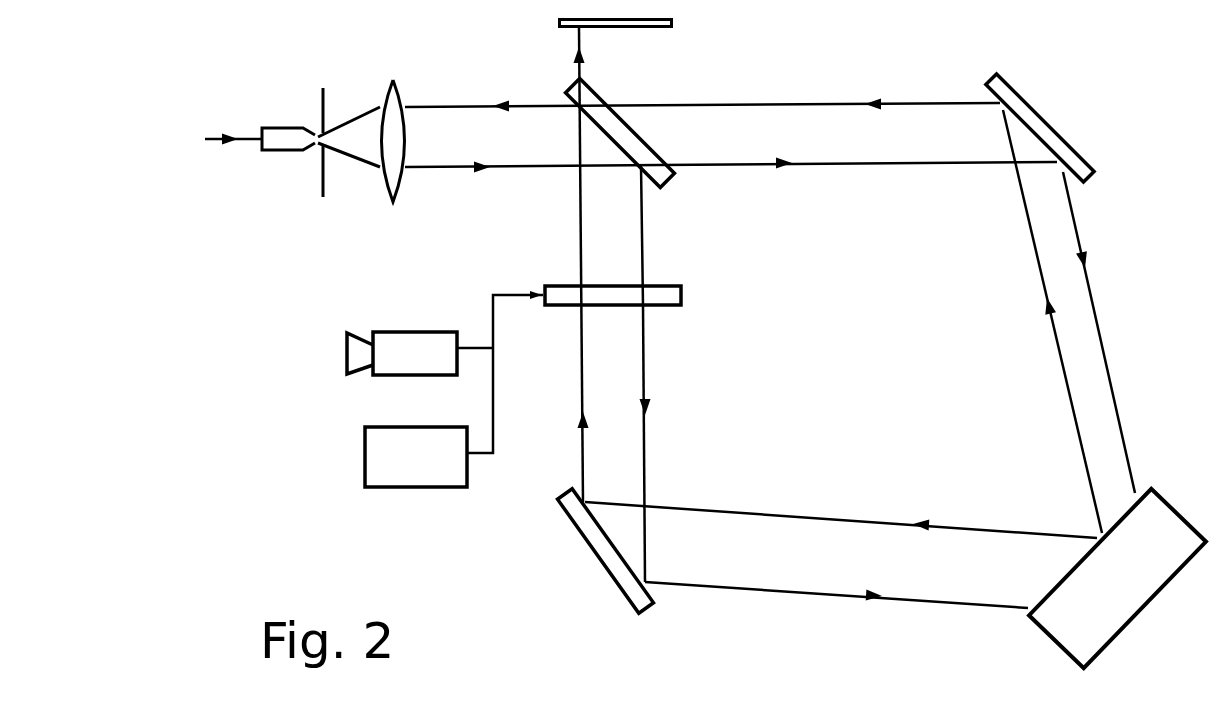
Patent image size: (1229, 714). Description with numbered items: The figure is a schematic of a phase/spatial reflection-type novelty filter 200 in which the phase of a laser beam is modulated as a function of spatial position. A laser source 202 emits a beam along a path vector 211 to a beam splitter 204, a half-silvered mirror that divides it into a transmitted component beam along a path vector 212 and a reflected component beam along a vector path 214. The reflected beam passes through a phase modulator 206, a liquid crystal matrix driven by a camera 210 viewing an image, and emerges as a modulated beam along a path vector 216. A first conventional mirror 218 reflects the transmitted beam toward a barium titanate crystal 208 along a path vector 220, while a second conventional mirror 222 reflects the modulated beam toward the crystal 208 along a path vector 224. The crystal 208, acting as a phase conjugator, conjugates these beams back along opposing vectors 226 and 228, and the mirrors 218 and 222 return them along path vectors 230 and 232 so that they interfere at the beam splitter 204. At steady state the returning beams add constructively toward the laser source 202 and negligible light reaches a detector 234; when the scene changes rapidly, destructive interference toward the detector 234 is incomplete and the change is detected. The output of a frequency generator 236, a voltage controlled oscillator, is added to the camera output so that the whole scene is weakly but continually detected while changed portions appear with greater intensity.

The phase/spatial reflection-type novelty filter 200 is at (272, 97).
The laser source 202 is at (272, 151).
The beam splitter 204 is at (573, 80).
The phase modulator 206 is at (672, 305).
The barium titanate crystal 208 is at (1117, 578).
The camera 210 is at (420, 353).
The path vector 211 is at (514, 167).
The path vector 212 is at (880, 165).
The vector path 214 is at (643, 238).
The path vector 216 is at (645, 445).
The first conventional mirror 218 is at (1068, 137).
The path vector 220 is at (1097, 300).
The second conventional mirror 222 is at (622, 600).
The path vector 224 is at (783, 592).
The vector 226 is at (1058, 352).
The vector 228 is at (860, 523).
The path vector 230 is at (793, 103).
The path vector 232 is at (582, 455).
The detector 234 is at (650, 28).
The frequency generator 236 is at (373, 490).